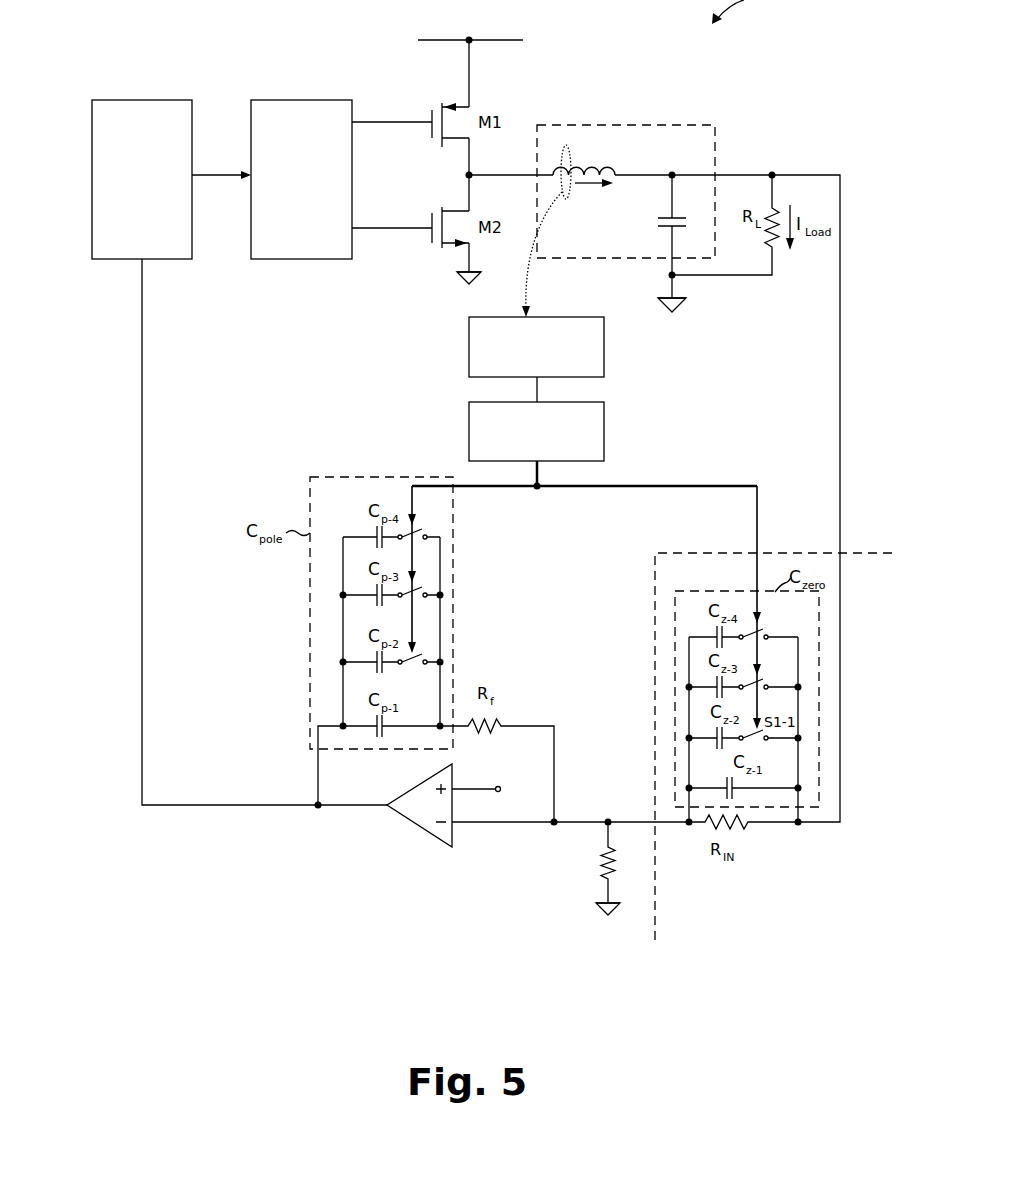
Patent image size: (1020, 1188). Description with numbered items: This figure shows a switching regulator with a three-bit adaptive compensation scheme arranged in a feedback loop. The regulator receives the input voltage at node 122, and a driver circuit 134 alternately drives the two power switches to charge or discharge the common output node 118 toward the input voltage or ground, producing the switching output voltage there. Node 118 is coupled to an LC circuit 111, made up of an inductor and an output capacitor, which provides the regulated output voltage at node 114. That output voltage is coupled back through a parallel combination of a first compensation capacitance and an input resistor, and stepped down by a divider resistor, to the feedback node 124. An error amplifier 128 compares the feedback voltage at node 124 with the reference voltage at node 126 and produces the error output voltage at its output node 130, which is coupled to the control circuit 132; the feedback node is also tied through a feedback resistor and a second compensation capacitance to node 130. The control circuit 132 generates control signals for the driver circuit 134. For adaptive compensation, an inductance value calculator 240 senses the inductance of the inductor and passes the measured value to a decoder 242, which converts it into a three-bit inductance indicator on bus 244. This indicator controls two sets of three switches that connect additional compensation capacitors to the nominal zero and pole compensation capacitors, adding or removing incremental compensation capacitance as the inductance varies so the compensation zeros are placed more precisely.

The control circuit 132 is at (92, 125).
The driver circuit 134 is at (262, 260).
The input voltage node 122 is at (500, 40).
The output node 118 is at (469, 175).
The LC circuit 111 is at (668, 125).
The output voltage node 114 is at (822, 175).
The inductance value calculator 240 is at (469, 341).
The decoder 242 is at (469, 428).
The decoder output bus L[2:0] 244 is at (528, 488).
The output terminal of error amplifier 130 is at (199, 806).
The error amplifier 128 is at (391, 810).
The reference voltage node 126 is at (496, 787).
The feedback node 124 is at (557, 826).